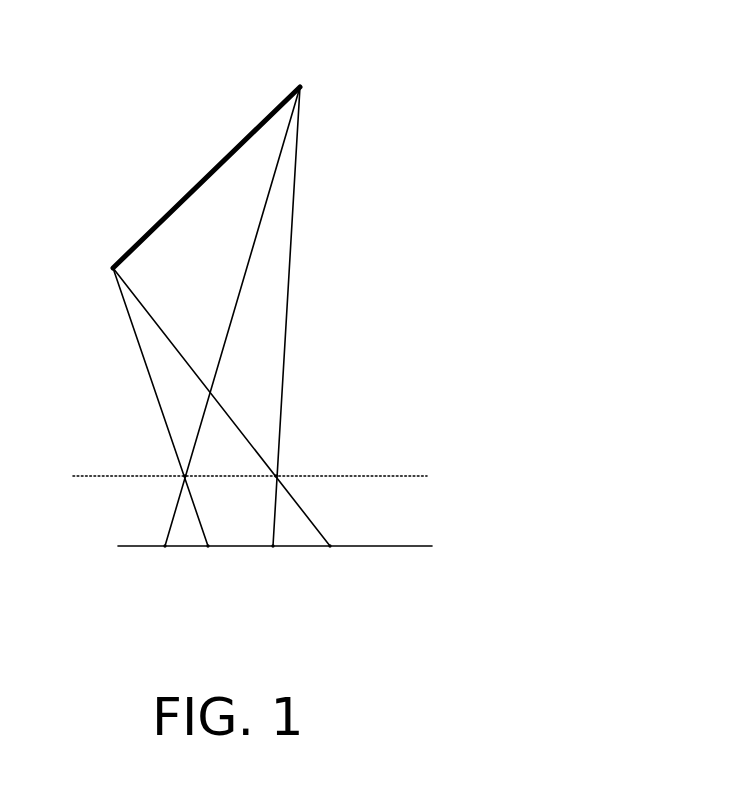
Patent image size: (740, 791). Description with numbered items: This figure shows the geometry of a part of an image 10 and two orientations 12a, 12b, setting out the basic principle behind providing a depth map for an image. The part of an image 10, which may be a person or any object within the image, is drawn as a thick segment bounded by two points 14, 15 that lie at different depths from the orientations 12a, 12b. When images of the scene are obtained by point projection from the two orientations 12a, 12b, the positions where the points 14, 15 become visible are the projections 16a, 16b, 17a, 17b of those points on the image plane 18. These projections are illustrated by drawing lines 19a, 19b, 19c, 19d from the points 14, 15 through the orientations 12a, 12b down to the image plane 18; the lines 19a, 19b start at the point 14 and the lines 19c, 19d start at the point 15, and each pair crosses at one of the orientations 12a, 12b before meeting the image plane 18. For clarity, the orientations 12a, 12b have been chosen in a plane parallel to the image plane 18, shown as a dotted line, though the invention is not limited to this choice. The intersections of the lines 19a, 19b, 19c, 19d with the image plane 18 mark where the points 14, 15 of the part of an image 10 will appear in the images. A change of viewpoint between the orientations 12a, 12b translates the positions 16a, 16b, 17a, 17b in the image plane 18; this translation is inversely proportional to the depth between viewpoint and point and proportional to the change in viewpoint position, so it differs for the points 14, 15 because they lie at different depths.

The part of an image 10 is at (212, 167).
The point on the part of an image 14 is at (112, 270).
The point on the part of an image 15 is at (300, 86).
The line 19a is at (143, 358).
The line 19b is at (165, 328).
The line 19c is at (255, 230).
The line 19d is at (288, 288).
The orientation 12a is at (183, 474).
The orientation 12b is at (277, 475).
The projection 16a is at (165, 548).
The projection 17a is at (208, 548).
The projection 16b is at (273, 548).
The projection 17b is at (330, 548).
The image plane 18 is at (408, 548).